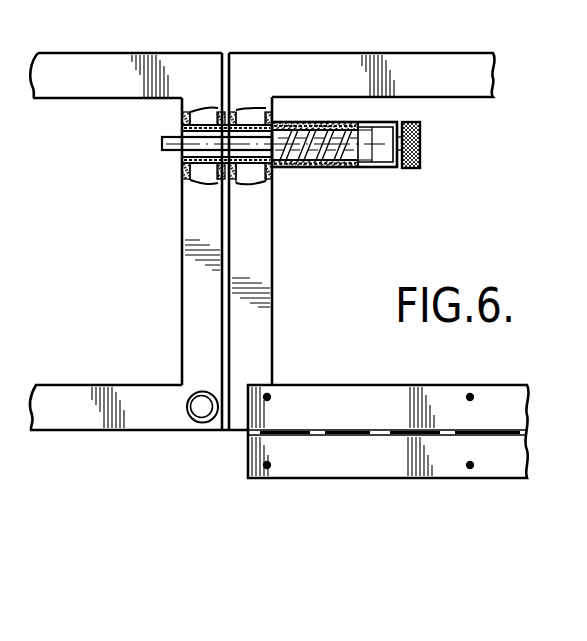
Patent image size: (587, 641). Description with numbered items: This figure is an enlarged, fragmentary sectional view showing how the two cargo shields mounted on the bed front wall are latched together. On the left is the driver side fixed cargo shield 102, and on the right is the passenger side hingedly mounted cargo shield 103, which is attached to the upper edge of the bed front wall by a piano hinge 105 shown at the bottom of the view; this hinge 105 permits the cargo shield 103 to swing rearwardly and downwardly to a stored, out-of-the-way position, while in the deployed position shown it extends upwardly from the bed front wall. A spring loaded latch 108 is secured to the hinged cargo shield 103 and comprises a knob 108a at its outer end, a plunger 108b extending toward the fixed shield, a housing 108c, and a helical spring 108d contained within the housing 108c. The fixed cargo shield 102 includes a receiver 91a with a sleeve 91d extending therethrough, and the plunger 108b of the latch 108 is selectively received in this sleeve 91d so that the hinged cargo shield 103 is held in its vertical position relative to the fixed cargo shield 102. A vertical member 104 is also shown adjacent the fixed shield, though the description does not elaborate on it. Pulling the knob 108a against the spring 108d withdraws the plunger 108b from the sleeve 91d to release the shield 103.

The driver side fixed cargo shield 102 is at (63, 53).
The passenger side hingedly mounted cargo shield 103 is at (272, 53).
The vertical support member 104 is at (182, 307).
The piano hinge 105 is at (360, 413).
The receiver 91a is at (182, 125).
The sleeve 91d is at (182, 158).
The spring loaded latch 108 is at (284, 154).
The knob 108a is at (411, 168).
The plunger 108b is at (162, 146).
The housing 108c is at (310, 168).
The helical spring 108d is at (344, 122).